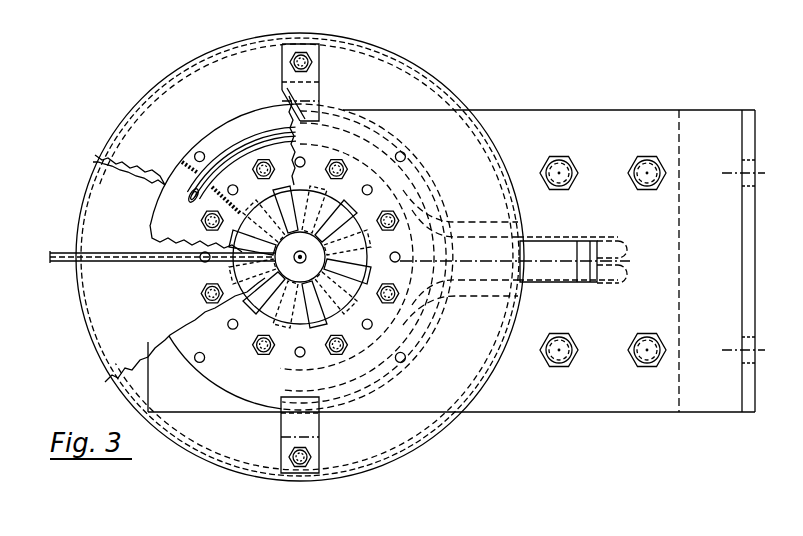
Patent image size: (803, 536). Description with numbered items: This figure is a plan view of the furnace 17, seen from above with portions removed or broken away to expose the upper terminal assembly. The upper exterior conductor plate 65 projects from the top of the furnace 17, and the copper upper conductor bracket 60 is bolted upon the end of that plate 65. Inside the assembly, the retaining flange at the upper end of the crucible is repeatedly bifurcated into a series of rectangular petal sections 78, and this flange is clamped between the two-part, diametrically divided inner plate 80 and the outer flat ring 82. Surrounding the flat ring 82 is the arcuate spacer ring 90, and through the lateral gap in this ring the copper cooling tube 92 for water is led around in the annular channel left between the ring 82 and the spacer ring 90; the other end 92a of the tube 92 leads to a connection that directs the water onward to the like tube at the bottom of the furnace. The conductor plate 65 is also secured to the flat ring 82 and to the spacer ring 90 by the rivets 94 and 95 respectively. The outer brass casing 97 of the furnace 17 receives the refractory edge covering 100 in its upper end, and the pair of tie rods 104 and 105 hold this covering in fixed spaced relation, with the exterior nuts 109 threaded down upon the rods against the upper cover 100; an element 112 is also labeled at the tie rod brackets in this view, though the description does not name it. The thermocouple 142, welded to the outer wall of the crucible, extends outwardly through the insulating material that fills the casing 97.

The furnace 17 is at (79, 296).
The upper conductor bracket 60 is at (757, 110).
The conductor plate 65 is at (500, 110).
The petal sections 78 is at (335, 300).
The inner plate 80 is at (152, 226).
The outer flat ring 82 is at (170, 212).
The arcuate spacer ring 90 is at (190, 190).
The cooling tube 92 is at (240, 148).
The other end of tube 92a is at (607, 285).
The rivets 94 is at (196, 152).
The rivets 95 is at (182, 163).
The outer brass casing 97 is at (82, 312).
The refractory edge covering 100 is at (97, 172).
The tie rod 104 is at (303, 468).
The tie rod 105 is at (301, 52).
The exterior nuts 109 is at (312, 62).
The bracket slot 112 is at (320, 90).
The thermocouple 142 is at (75, 260).